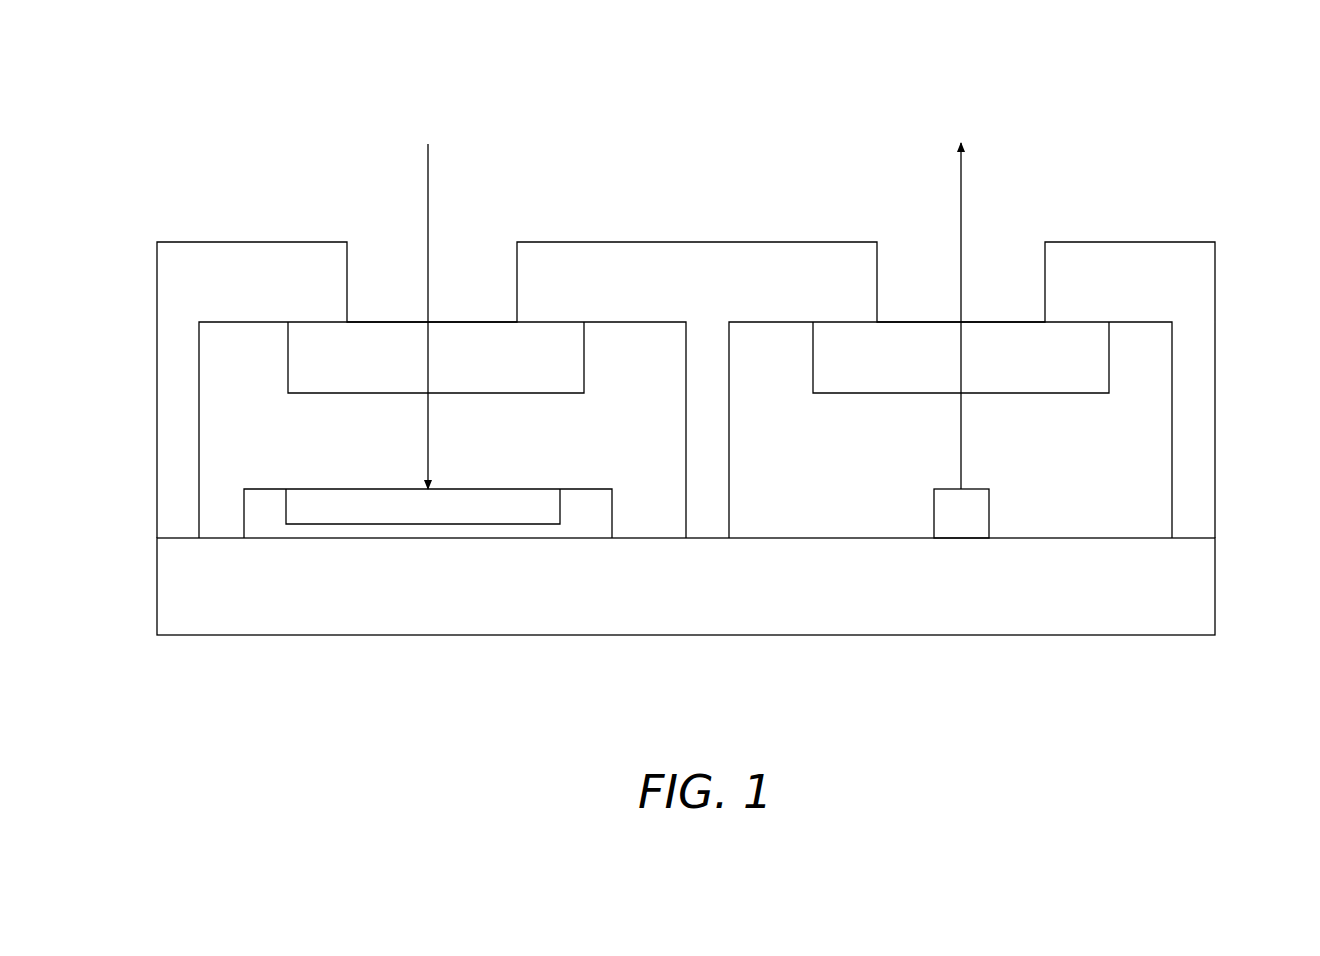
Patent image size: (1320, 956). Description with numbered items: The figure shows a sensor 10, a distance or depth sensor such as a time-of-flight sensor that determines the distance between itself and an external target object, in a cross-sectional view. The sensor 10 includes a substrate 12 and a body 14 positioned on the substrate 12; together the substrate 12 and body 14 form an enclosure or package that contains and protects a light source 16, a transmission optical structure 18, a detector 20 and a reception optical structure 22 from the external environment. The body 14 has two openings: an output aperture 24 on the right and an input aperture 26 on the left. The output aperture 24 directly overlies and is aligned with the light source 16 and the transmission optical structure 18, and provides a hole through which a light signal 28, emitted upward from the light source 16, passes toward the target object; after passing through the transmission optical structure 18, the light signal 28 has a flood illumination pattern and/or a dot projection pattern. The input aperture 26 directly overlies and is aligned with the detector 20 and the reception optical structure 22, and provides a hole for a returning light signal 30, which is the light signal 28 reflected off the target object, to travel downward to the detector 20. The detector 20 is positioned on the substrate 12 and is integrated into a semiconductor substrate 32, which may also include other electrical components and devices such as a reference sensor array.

The sensor 10 is at (210, 108).
The substrate 12 is at (1193, 586).
The body 14 is at (1195, 286).
The light source 16 is at (977, 516).
The transmission optical structure 18 is at (1060, 380).
The detector 20 is at (495, 496).
The reception optical structure 22 is at (566, 354).
The output aperture 24 is at (1000, 235).
The input aperture 26 is at (393, 236).
The light signal 28 is at (963, 190).
The light signal 30 is at (429, 190).
The semiconductor substrate 32 is at (272, 498).